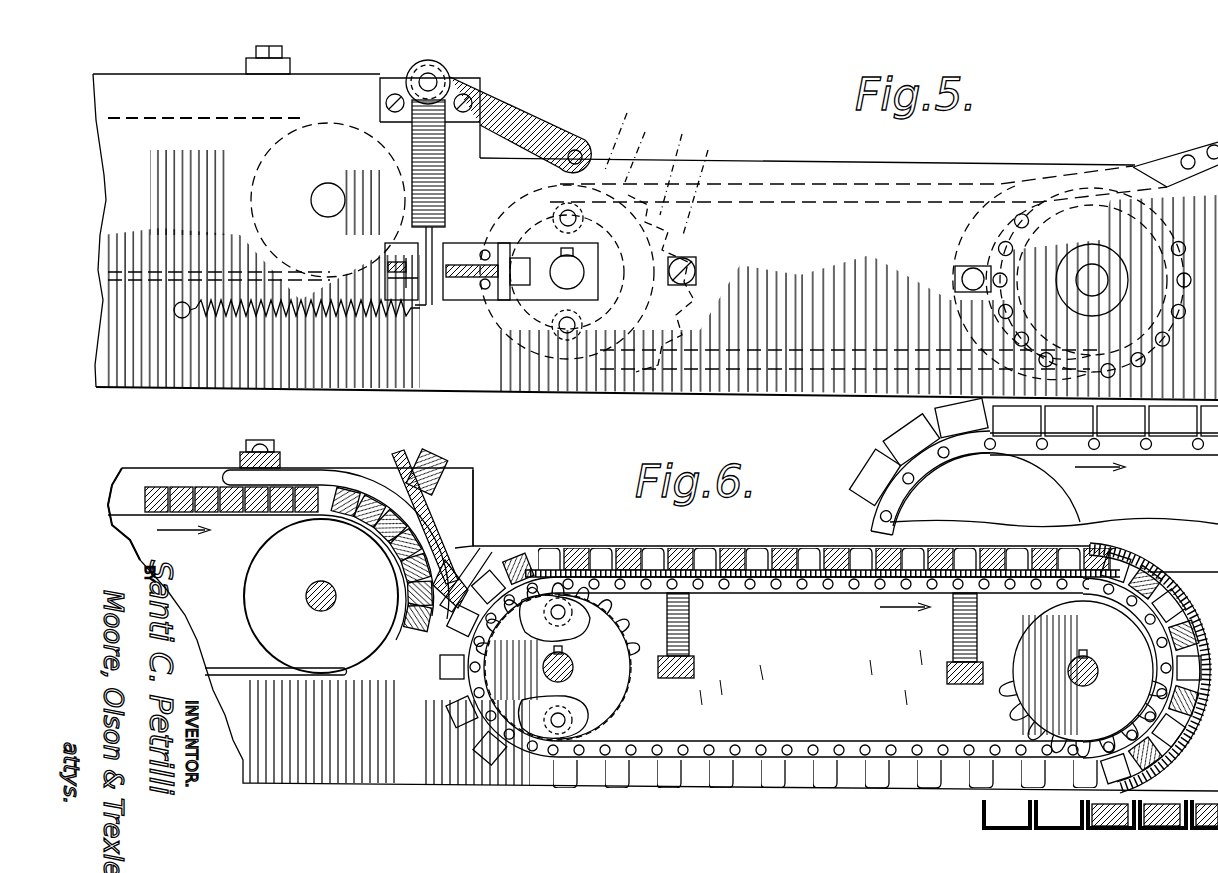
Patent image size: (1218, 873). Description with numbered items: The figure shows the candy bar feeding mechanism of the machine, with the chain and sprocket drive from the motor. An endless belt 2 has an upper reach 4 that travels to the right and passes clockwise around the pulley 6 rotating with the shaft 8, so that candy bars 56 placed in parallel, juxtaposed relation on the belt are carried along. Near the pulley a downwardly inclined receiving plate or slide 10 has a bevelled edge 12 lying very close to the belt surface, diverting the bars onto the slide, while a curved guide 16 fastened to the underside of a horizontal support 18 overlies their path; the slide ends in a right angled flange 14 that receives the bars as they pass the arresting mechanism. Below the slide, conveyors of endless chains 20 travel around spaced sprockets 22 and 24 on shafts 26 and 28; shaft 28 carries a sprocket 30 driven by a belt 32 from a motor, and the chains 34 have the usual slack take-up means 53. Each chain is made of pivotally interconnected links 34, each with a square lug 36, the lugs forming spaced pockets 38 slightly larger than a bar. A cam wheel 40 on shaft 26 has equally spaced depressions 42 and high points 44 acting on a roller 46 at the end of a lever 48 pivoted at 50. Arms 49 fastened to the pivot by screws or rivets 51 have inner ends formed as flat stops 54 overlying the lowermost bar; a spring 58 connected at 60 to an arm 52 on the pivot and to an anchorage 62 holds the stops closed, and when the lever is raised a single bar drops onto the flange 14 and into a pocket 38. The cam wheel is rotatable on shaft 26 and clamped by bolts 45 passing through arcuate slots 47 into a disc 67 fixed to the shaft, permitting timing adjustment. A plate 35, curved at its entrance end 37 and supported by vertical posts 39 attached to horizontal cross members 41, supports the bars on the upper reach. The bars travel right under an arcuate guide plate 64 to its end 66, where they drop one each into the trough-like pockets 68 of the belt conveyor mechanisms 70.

In FIG. 5, the endless belt 2 is at (280, 120).
In FIG. 6, the endless belt 2 is at (290, 676).
In FIG. 6, the upper reach 4 is at (125, 515).
In FIG. 5, the pulley 6 is at (266, 157).
In FIG. 6, the pulley 6 is at (295, 564).
In FIG. 5, the shaft 8 is at (322, 199).
In FIG. 6, the shaft 8 is at (306, 600).
In FIG. 6, the receiving plate or slide 10 is at (420, 590).
In FIG. 6, the bevelled edge 12 is at (398, 565).
In FIG. 6, the right angled flange 14 is at (470, 600).
In FIG. 6, the curved guide 16 is at (304, 475).
In FIG. 6, the horizontal support 18 is at (240, 458).
In FIG. 6, the endless chains 20 is at (830, 650).
In FIG. 5, the sprocket 22 is at (686, 262).
In FIG. 6, the sprocket 22 is at (640, 700).
In FIG. 6, the sprocket 24 is at (1005, 690).
In FIG. 5, the shaft 26 is at (580, 262).
In FIG. 6, the shaft 26 is at (568, 680).
In FIG. 5, the shaft 28 is at (1098, 272).
In FIG. 6, the shaft 28 is at (1085, 686).
In FIG. 5, the sprocket 30 is at (1030, 326).
In FIG. 5, the belt 32 is at (1212, 150).
In FIG. 5, the links 34 is at (824, 198).
In FIG. 6, the links 34 is at (808, 596).
In FIG. 6, the plate 35 is at (778, 570).
In FIG. 6, the lug 36 is at (728, 558).
In FIG. 6, the entrance end 37 is at (500, 570).
In FIG. 6, the pockets 38 is at (650, 775).
In FIG. 6, the vertical posts 39 is at (690, 625).
In FIG. 5, the cam wheel 40 is at (858, 181).
In FIG. 6, the horizontal cross members 41 is at (695, 668).
In FIG. 5, the cam-like depressions 42 is at (652, 152).
In FIG. 5, the high points 44 is at (646, 145).
In FIG. 5, the bolts 45 is at (538, 174).
In FIG. 6, the bolts 45 is at (575, 635).
In FIG. 5, the roller 46 is at (580, 148).
In FIG. 5, the arcuate slots 47 is at (556, 222).
In FIG. 6, the arcuate slots 47 is at (545, 660).
In FIG. 5, the lever 48 is at (512, 115).
In FIG. 6, the arms 49 is at (423, 512).
In FIG. 5, the pivot 50 is at (430, 80).
In FIG. 6, the pivot 50 is at (440, 470).
In FIG. 6, the screws or rivets 51 is at (395, 468).
In FIG. 5, the arm 52 is at (412, 164).
In FIG. 5, the slack take-up means 53 is at (482, 240).
In FIG. 6, the flat stop 54 is at (465, 575).
In FIG. 6, the candy bars 56 is at (470, 540).
In FIG. 5, the spring 58 is at (358, 320).
In FIG. 5, the connection 60 is at (432, 306).
In FIG. 5, the anchorage 62 is at (184, 320).
In FIG. 6, the arcuate guide plate 64 is at (1170, 600).
In FIG. 6, the end of guide plate 66 is at (1140, 782).
In FIG. 6, the disc 67 is at (600, 620).
In FIG. 6, the trough-like pockets 68 is at (898, 440).
In FIG. 6, the belt conveyor mechanisms 70 is at (1175, 455).